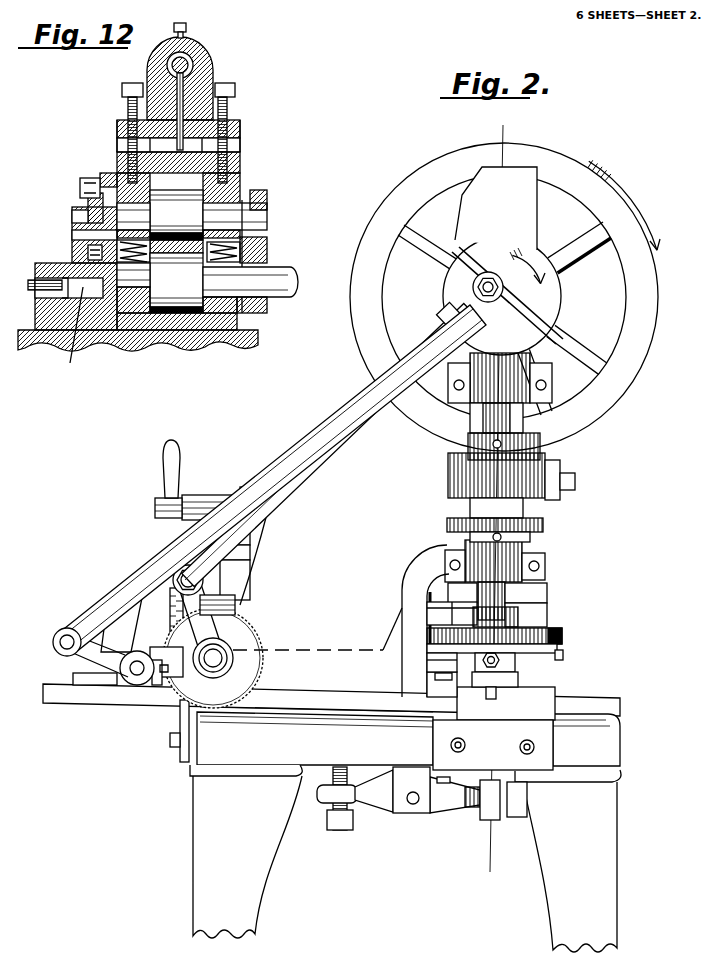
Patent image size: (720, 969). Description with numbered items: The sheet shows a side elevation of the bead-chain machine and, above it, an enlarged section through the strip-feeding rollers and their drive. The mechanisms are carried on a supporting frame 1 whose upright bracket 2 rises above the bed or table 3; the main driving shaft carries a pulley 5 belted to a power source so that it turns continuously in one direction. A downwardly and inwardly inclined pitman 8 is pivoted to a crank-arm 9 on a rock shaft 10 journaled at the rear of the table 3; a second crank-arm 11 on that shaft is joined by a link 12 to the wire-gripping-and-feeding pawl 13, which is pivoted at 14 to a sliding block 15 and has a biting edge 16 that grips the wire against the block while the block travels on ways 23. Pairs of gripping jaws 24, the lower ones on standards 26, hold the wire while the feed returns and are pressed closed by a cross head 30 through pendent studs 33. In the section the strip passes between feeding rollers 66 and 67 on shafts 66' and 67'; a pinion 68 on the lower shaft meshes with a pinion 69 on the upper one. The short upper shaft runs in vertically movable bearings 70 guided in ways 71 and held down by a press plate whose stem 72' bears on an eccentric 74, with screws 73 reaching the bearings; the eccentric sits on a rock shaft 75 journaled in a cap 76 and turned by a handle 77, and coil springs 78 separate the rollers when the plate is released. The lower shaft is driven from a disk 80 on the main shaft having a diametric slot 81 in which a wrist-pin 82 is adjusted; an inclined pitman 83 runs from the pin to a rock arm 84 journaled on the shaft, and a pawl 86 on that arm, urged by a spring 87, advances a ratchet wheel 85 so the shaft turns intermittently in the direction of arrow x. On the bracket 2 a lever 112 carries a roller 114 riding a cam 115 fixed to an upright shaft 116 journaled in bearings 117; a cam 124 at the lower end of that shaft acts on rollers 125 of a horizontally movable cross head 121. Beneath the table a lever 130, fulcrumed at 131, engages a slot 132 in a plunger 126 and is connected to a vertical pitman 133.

In FIG. 2, the supporting frame 1 is at (603, 792).
In FIG. 2, the upright bracket 2 is at (530, 220).
In FIG. 12, the main supporting bed or table 3 is at (257, 340).
In FIG. 2, the main supporting bed or table 3 is at (605, 722).
In FIG. 2, the pulley 5 is at (372, 239).
In FIG. 2, the pitman 8 is at (280, 463).
In FIG. 2, the crank-arm 9 is at (83, 650).
In FIG. 2, the rock shaft 10 is at (137, 676).
In FIG. 2, the crank-arm 11 is at (120, 620).
In FIG. 12, the link 12 is at (95, 172).
In FIG. 2, the link 12 is at (147, 597).
In FIG. 12, the wire-gripping-and-feeding pawl 13 is at (88, 207).
In FIG. 12, the pivot 14 is at (88, 232).
In FIG. 12, the sliding block 15 is at (53, 268).
In FIG. 12, the biting edge 16 is at (80, 247).
In FIG. 12, the ways 23 is at (74, 330).
In FIG. 2, the gripping jaws 24 is at (430, 656).
In FIG. 2, the standards 26 is at (435, 672).
In FIG. 2, the cross head 30 is at (425, 585).
In FIG. 2, the pendent studs 33 is at (440, 605).
In FIG. 12, the feeding roller 66 is at (177, 291).
In FIG. 12, the lower shaft 66' is at (267, 290).
In FIG. 2, the lower shaft 66' is at (293, 654).
In FIG. 12, the feeding roller 67 is at (160, 221).
In FIG. 12, the superposed shaft 67' is at (255, 256).
In FIG. 12, the pinion 68 is at (263, 308).
In FIG. 12, the pinion 69 is at (267, 194).
In FIG. 2, the pinion 69 is at (223, 603).
In FIG. 12, the vertically movable bearings 70 is at (125, 183).
In FIG. 12, the vertical ways 71 is at (122, 143).
In FIG. 2, the vertical ways 71 is at (233, 572).
In FIG. 12, the stem 72' is at (220, 132).
In FIG. 12, the screws 73 is at (128, 107).
In FIG. 2, the screws 73 is at (210, 540).
In FIG. 12, the eccentric 74 is at (190, 58).
In FIG. 12, the rock shaft 75 is at (172, 64).
In FIG. 2, the rock shaft 75 is at (155, 508).
In FIG. 12, the cap 76 is at (210, 72).
In FIG. 2, the cap 76 is at (198, 497).
In FIG. 2, the operating handle 77 is at (165, 452).
In FIG. 12, the coil springs 78 is at (253, 248).
In FIG. 2, the disk 80 is at (558, 298).
In FIG. 2, the diametric slot 81 is at (517, 314).
In FIG. 2, the wrist-pin 82 is at (488, 272).
In FIG. 2, the pitman 83 is at (352, 430).
In FIG. 2, the rock arm 84 is at (210, 628).
In FIG. 2, the ratchet wheel 85 is at (250, 680).
In FIG. 2, the pawl 86 is at (176, 586).
In FIG. 2, the spring 87 is at (173, 628).
In FIG. 2, the lever 112 is at (563, 498).
In FIG. 2, the stud or roller 114 is at (550, 475).
In FIG. 2, the cam 115 is at (470, 512).
In FIG. 2, the upright shaft 116 is at (477, 417).
In FIG. 2, the bearings 117 is at (449, 388).
In FIG. 2, the cross head 121 is at (503, 668).
In FIG. 2, the cam 124 is at (562, 637).
In FIG. 2, the rollers 125 is at (508, 644).
In FIG. 2, the plunger 126 is at (483, 770).
In FIG. 2, the lever 130 is at (378, 800).
In FIG. 2, the fulcrum 131 is at (413, 806).
In FIG. 2, the slot 132 is at (482, 812).
In FIG. 2, the rod or pitman 133 is at (336, 833).
In FIG. 2, the arrow x is at (165, 678).